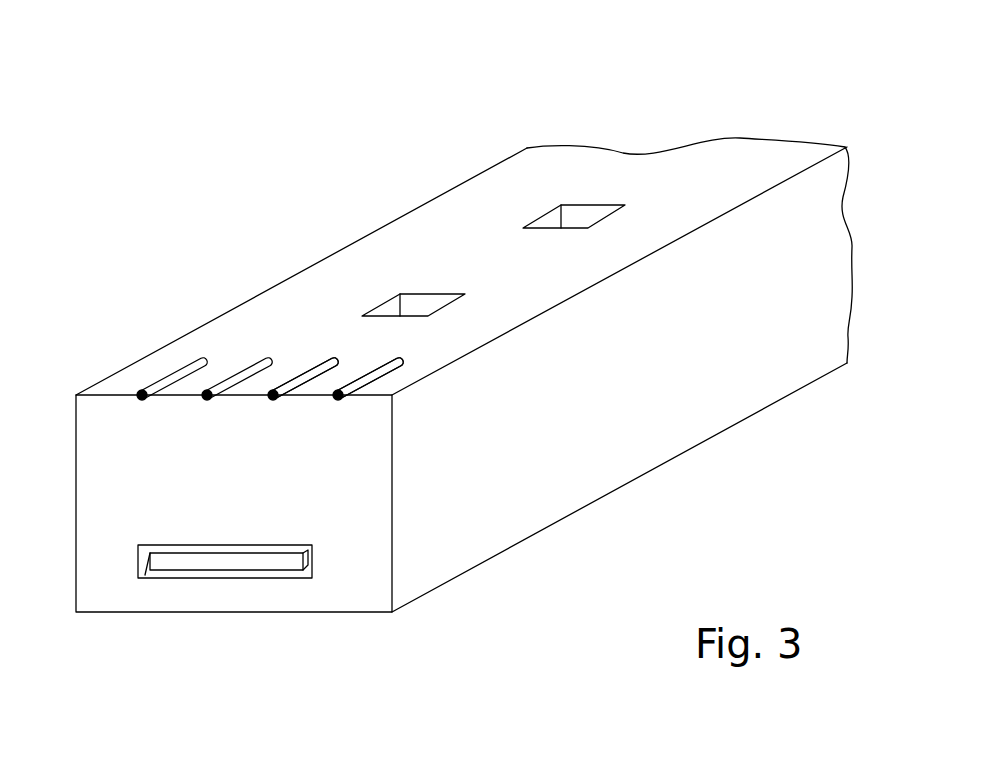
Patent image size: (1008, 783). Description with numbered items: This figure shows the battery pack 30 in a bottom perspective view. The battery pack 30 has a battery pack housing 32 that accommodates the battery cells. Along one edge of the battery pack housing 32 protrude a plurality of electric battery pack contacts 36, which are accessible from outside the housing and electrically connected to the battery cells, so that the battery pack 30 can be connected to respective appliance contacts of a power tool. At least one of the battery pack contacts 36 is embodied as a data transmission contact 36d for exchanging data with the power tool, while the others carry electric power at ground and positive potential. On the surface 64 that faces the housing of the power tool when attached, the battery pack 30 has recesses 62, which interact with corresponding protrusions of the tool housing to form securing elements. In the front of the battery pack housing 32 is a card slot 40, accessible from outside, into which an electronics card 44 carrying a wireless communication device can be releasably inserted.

The battery pack 30 is at (660, 112).
The battery pack housing 32 is at (613, 452).
The battery pack contacts 36 is at (207, 387).
The data transmission contact 36d is at (373, 378).
The card slot 40 is at (172, 578).
The electronics card 44 is at (250, 559).
The recesses 62 is at (417, 300).
The surface 64 is at (618, 177).